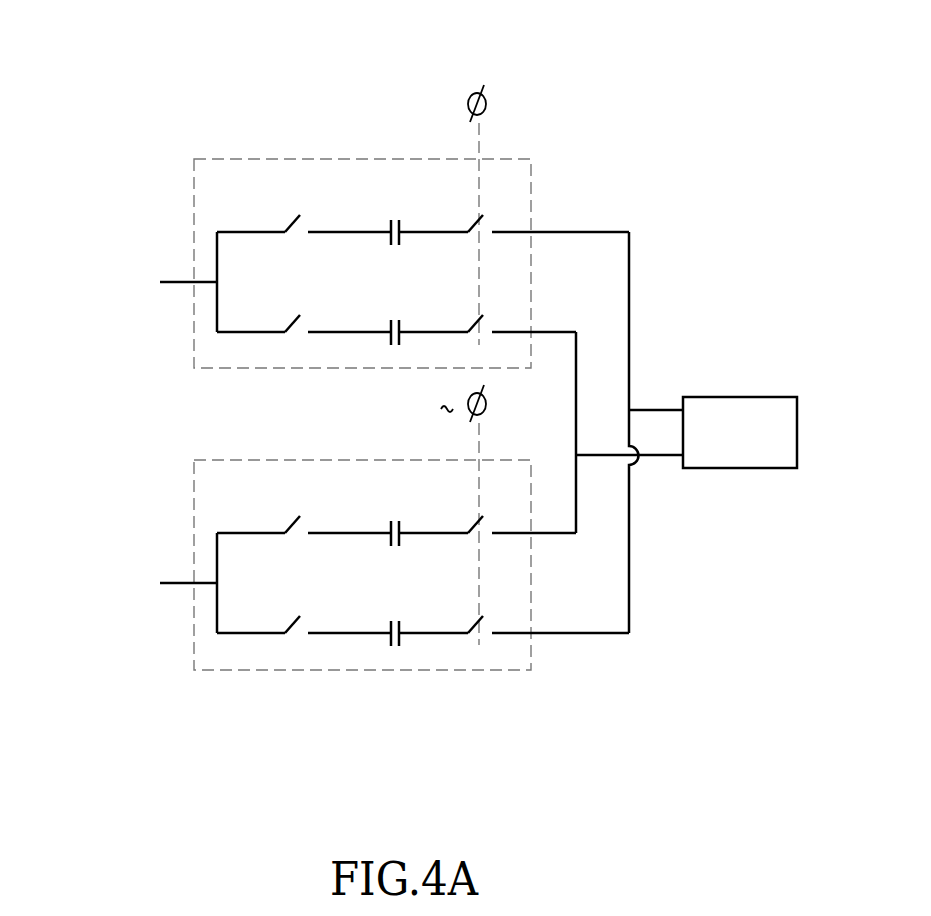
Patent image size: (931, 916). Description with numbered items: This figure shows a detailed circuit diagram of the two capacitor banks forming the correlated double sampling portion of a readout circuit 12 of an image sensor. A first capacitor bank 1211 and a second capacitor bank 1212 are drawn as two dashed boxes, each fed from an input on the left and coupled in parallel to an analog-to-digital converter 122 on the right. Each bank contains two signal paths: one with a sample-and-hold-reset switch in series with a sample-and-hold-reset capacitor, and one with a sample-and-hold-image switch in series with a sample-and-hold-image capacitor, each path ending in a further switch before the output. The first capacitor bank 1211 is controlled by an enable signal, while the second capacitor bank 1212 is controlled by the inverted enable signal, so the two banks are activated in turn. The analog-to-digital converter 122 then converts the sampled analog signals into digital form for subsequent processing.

The readout circuit 12 is at (75, 42).
The first capacitor bank 1211 is at (363, 157).
The second capacitor bank 1212 is at (363, 458).
The analog-to-digital converter 122 is at (741, 395).